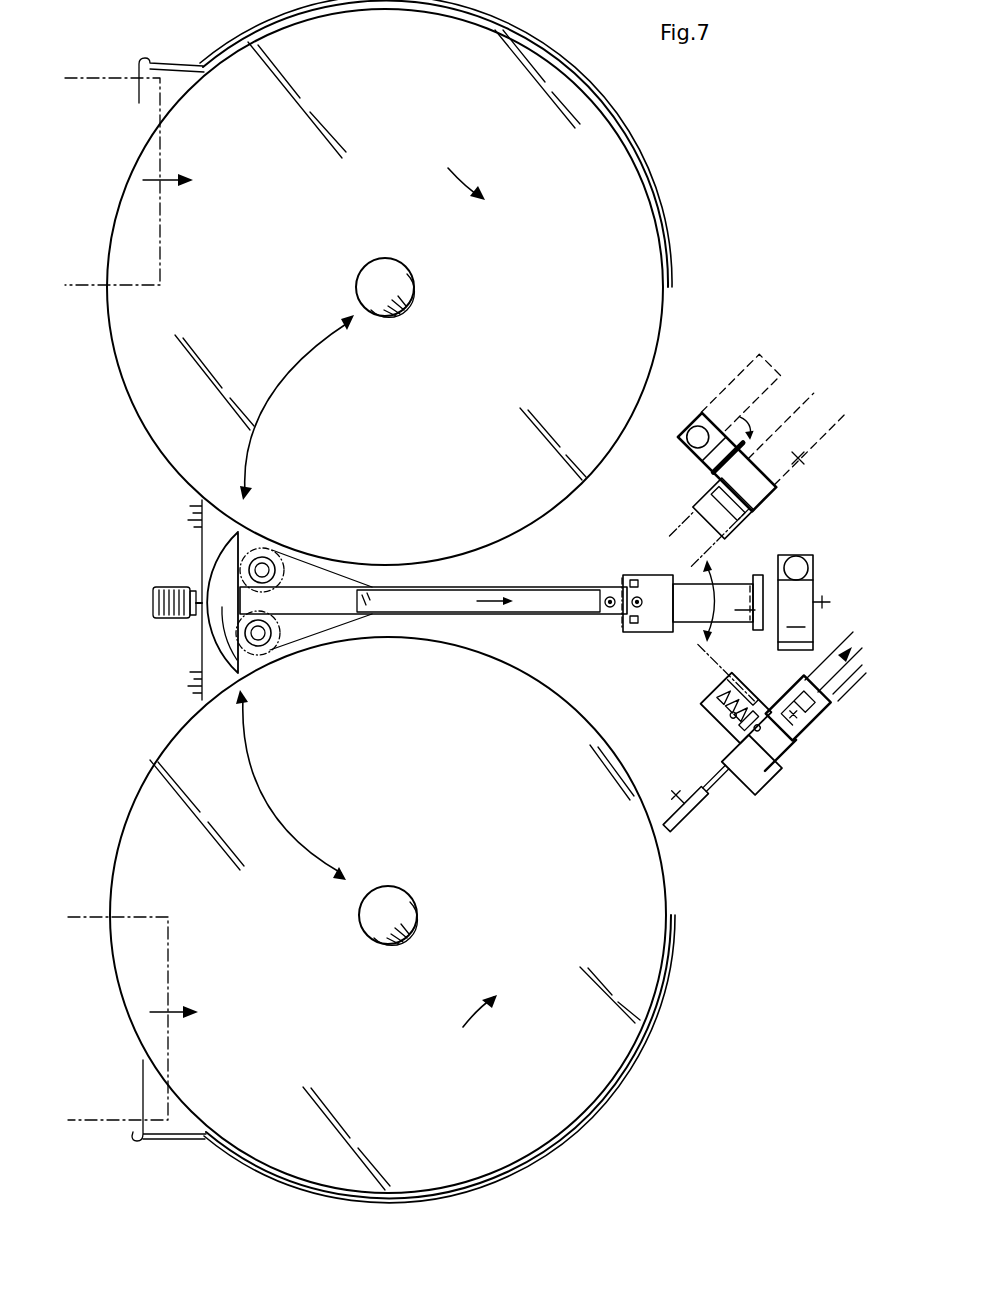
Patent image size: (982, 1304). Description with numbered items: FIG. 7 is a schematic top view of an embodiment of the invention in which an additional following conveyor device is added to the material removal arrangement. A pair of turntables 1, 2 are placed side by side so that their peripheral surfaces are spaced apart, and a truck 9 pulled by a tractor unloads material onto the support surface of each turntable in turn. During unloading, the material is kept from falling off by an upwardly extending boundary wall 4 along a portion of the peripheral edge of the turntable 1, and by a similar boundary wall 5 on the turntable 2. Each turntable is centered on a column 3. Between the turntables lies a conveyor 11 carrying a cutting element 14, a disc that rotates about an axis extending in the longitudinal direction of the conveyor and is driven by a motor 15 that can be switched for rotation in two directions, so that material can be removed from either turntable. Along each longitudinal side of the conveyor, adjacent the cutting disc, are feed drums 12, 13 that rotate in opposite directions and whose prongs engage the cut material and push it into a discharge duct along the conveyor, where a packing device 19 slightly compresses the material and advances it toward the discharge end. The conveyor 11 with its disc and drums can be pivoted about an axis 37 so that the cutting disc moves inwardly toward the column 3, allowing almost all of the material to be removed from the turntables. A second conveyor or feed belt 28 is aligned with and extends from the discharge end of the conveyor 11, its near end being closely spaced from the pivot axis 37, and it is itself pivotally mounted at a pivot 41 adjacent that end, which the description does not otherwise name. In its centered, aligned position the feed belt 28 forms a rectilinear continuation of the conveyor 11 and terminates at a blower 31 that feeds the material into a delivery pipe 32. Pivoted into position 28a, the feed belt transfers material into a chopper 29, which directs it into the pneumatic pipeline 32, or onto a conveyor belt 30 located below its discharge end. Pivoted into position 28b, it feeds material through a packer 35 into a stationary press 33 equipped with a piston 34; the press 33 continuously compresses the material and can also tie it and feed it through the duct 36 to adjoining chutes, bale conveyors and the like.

The turntable 1 is at (594, 281).
The turntable 2 is at (544, 943).
The column 3 is at (392, 272).
The boundary wall 4 is at (553, 46).
The boundary wall 5 is at (605, 1100).
The truck 9 is at (88, 282).
The conveyor 11 is at (512, 587).
The feed drum 12 is at (268, 647).
The feed drum 13 is at (274, 560).
The cutting element 14 is at (224, 566).
The motor 15 is at (153, 598).
The packing device 19 is at (567, 600).
The feed belt 28 is at (656, 592).
The feed belt position 28a is at (676, 542).
The feed belt position 28b is at (676, 688).
The chopper 29 is at (708, 462).
The conveyor belt 30 is at (804, 460).
The blower 31 is at (808, 590).
The delivery pipe 32 is at (800, 560).
The stationary press 33 is at (792, 748).
The piston 34 is at (766, 790).
The packer 35 is at (722, 724).
The duct 36 is at (814, 668).
The pivot axis 37 is at (610, 596).
The pivot pin of transfer head 41 is at (632, 607).